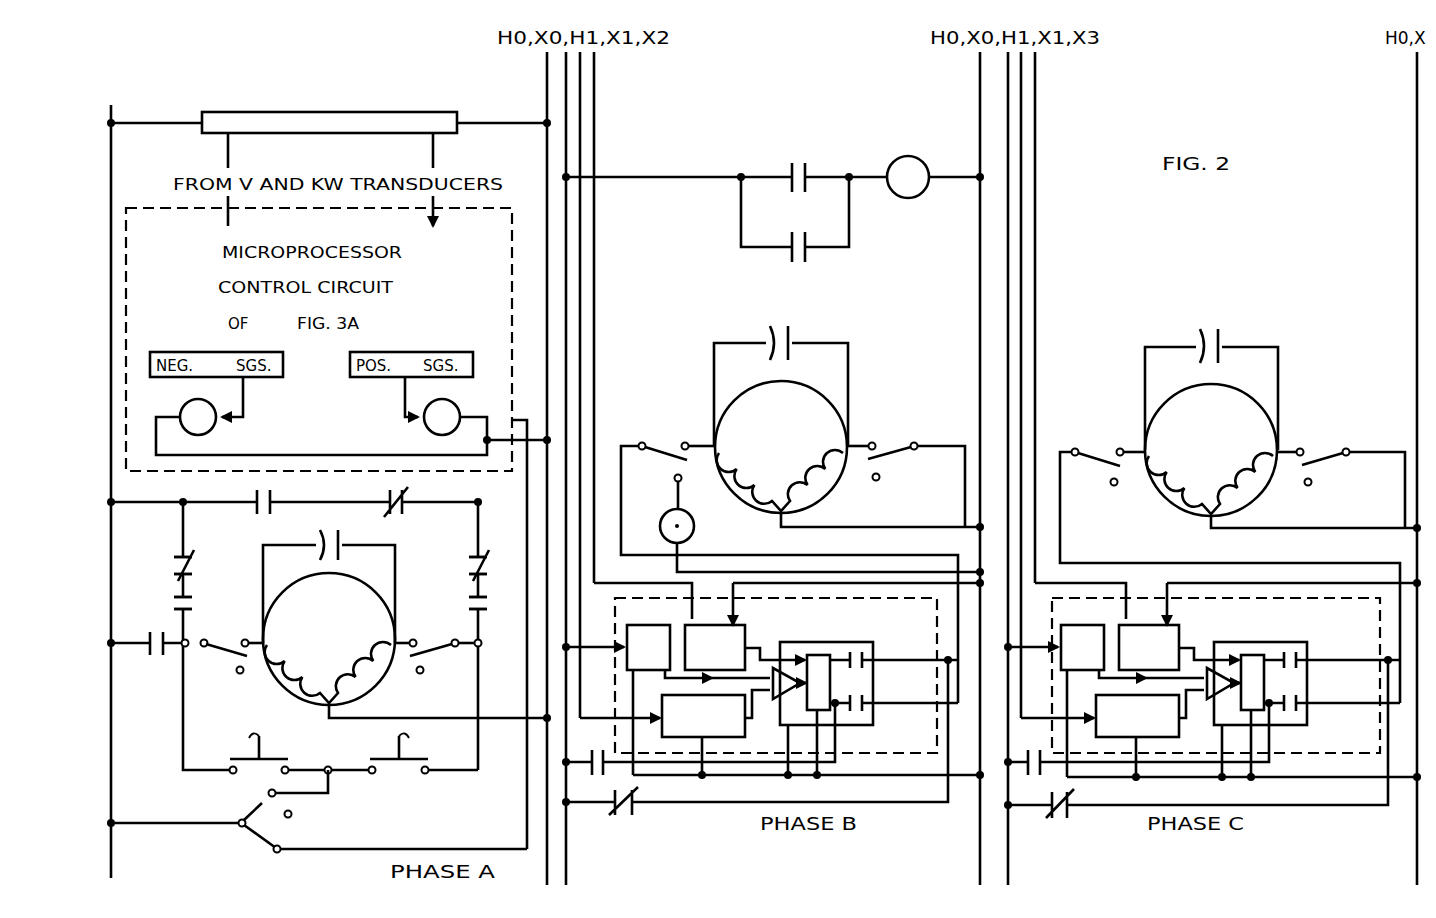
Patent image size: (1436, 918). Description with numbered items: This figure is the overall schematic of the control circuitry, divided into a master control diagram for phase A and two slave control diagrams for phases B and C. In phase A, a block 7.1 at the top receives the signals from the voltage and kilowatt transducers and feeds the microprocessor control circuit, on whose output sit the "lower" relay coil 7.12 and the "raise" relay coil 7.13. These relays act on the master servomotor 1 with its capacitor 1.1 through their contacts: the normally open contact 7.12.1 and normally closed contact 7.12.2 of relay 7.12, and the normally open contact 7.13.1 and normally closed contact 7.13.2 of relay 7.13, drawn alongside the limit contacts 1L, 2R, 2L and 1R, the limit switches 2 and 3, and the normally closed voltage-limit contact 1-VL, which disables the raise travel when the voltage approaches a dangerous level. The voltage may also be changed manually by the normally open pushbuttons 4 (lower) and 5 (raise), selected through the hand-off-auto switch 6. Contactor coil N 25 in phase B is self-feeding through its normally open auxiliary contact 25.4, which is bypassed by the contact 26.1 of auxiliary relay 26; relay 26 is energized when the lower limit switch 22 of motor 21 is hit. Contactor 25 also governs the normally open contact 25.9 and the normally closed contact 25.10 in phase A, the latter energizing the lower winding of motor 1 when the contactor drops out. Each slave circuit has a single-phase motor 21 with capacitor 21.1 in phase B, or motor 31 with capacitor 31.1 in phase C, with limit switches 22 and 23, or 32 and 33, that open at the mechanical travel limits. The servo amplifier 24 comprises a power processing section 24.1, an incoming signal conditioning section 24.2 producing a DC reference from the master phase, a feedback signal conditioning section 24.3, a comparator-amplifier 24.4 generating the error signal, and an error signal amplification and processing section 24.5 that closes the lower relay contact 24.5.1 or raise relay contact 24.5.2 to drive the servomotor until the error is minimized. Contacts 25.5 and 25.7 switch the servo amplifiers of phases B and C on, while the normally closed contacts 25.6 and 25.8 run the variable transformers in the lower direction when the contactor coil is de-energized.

The transducer input terminal block 7.1 is at (351, 140).
The lower relay coil 7.12 is at (210, 430).
The raise relay coil 7.13 is at (430, 430).
The normally open contact of contactor N 25.9 is at (252, 514).
The normally closed contact of raise relay 1-VL is at (384, 516).
The raise limit contact 2R is at (170, 565).
The normally closed contact of relay 7.13 7.13.2 is at (194, 569).
The lower limit contact 1L is at (170, 606).
The normally open contact of relay 7.12 7.12.1 is at (194, 607).
The lower limit contact 2L is at (489, 559).
The normally closed contact of relay 7.12 7.12.2 is at (468, 567).
The raise limit contact 1R is at (493, 596).
The normally open contact of relay 7.13 7.13.1 is at (468, 607).
The normally closed contact of contactor N 25.10 is at (150, 658).
The servomotor 1 is at (369, 598).
The motor contact 1.1 is at (348, 518).
The lower limit switch 2 is at (218, 660).
The raise limit switch 3 is at (430, 660).
The lower pushbutton 4 is at (259, 753).
The raise pushbutton 5 is at (399, 753).
The hand-off-auto selector switch 6 is at (254, 807).
The auxiliary contact of contactor N 25.4 is at (807, 166).
The normally open contact of relay 26 26.1 is at (808, 258).
The contactor coil N 25 is at (904, 166).
The single phase motor 21 is at (806, 389).
The capacitor 21.1 is at (792, 328).
The lower limit switch 22 is at (658, 470).
The raise limit switch 23 is at (884, 464).
The auxiliary relay 26 is at (695, 540).
The servo amplifier 24 is at (884, 742).
The power processing section 24.1 is at (648, 633).
The incoming signal conditioning section 24.2 is at (752, 722).
The feedback signal conditioning section 24.3 is at (733, 640).
The comparator-amplifier 24.4 is at (788, 660).
The error signal amplification and processing section 24.5 is at (818, 662).
The lower relay contact 24.5.1 is at (872, 656).
The raise relay contact 24.5.2 is at (872, 699).
The normally open contact of contactor N 25.5 is at (594, 749).
The normally closed contact of contactor N 25.6 is at (626, 815).
The motor 31 is at (1236, 393).
The capacitor 31.1 is at (1222, 332).
The lower limit switch 32 is at (1100, 476).
The raise limit switch 33 is at (1318, 468).
The normally open contact of contactor N 25.7 is at (1030, 749).
The normally closed contact of contactor N 25.8 is at (1060, 818).